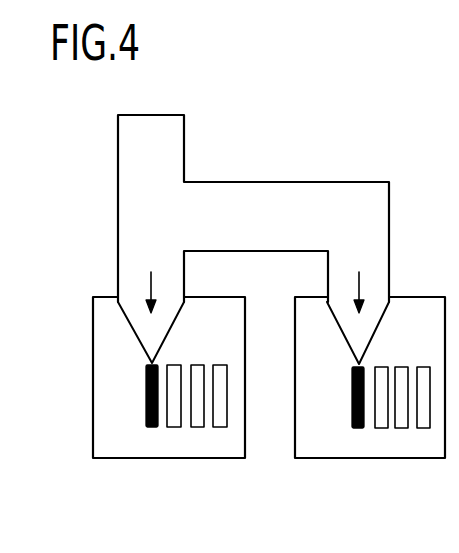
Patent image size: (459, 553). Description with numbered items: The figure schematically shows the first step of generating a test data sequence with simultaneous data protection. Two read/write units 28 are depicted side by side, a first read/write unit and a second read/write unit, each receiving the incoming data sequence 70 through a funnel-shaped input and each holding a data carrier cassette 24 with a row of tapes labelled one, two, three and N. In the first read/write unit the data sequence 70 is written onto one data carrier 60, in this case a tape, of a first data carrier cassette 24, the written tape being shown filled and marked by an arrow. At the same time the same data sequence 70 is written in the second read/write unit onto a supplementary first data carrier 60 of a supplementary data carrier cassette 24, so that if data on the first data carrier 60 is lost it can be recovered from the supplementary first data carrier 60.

The read/write unit 28 is at (269, 286).
The data sequence 70 is at (347, 330).
The data carrier 60 is at (352, 392).
The data carrier cassette 24 is at (357, 470).